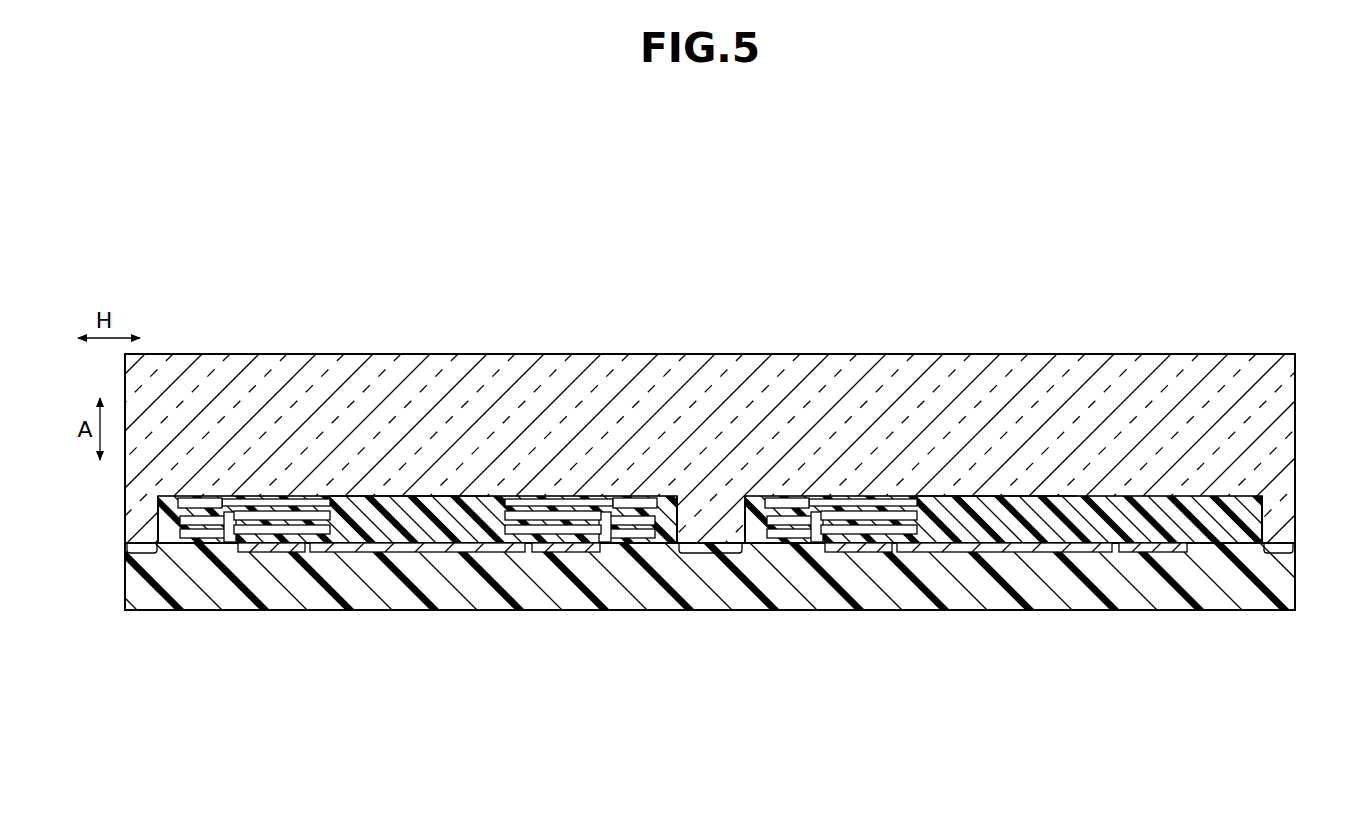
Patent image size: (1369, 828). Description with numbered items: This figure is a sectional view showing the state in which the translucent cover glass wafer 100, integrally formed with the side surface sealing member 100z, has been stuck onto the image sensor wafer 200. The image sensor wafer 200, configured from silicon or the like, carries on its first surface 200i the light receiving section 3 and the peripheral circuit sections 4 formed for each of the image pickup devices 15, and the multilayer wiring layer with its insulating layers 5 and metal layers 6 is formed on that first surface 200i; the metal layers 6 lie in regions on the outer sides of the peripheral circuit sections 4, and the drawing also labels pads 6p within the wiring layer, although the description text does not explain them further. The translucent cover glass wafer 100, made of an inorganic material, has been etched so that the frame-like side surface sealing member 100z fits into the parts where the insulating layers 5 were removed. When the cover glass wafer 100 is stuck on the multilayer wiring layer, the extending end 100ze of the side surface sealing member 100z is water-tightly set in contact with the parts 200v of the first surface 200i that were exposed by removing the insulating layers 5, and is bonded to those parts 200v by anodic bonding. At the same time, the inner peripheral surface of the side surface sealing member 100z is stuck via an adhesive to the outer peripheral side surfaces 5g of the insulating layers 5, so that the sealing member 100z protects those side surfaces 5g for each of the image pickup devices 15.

The translucent cover glass wafer 100 is at (985, 378).
The side surface sealing member 100z is at (700, 513).
The extending end 100ze is at (721, 536).
The outer peripheral side surfaces 5g is at (160, 499).
The insulating layers 5 is at (365, 525).
The metal layers 6 is at (300, 512).
The electrode pad 6p is at (205, 497).
The image pickup devices 15 is at (410, 480).
The image sensor wafer 200 is at (470, 600).
The parts exposed on the first surface 200v is at (140, 567).
The first surface 200i is at (663, 549).
The peripheral circuit sections 4 is at (263, 551).
The light receiving section 3 is at (400, 551).